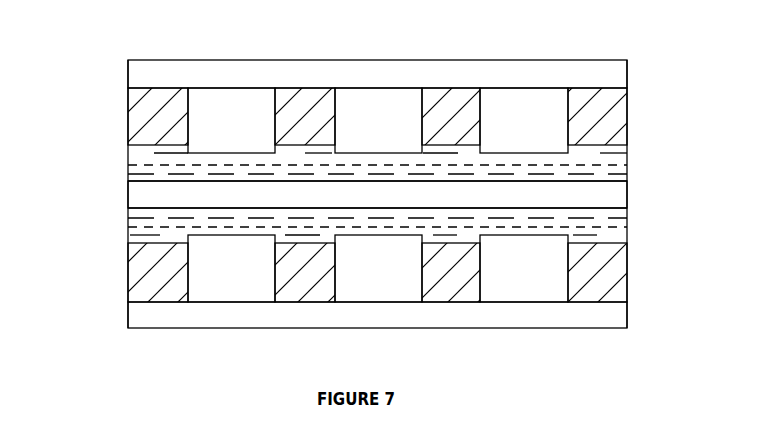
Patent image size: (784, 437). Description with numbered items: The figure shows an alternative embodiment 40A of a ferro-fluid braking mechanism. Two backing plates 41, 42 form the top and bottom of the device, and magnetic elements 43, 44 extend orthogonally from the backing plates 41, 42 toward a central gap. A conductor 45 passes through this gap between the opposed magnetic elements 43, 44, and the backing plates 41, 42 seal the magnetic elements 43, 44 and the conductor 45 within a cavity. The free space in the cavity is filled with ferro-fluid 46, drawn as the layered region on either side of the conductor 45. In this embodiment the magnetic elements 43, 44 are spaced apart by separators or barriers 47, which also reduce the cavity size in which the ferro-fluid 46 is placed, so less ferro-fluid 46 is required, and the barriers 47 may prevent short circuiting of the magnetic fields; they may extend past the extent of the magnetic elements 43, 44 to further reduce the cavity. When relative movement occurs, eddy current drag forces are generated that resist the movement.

The alternative embodiment 40A is at (103, 195).
The backing plate 41 is at (356, 54).
The backing plate 42 is at (357, 333).
The magnetic element 43 is at (373, 93).
The magnetic element 44 is at (346, 293).
The conductor 45 is at (615, 193).
The ferro-fluid 46 is at (615, 165).
The separators or barriers 47 is at (377, 195).